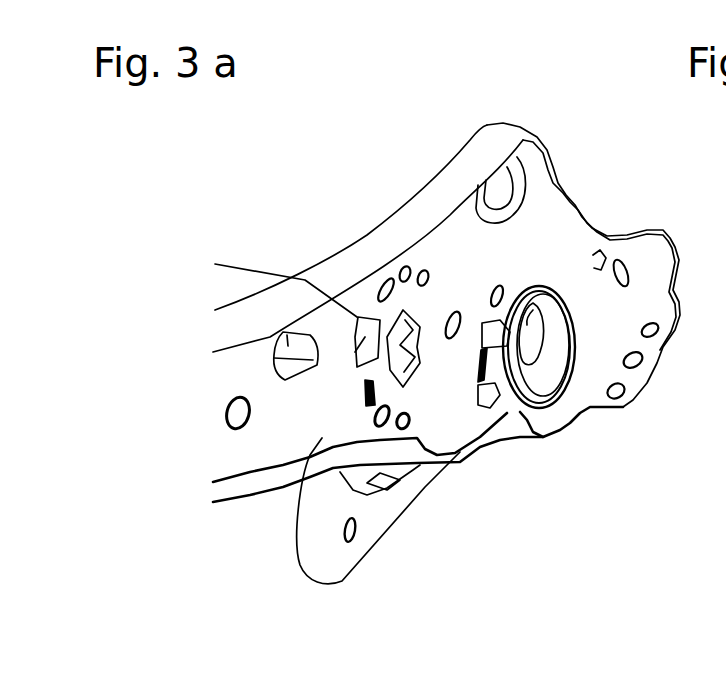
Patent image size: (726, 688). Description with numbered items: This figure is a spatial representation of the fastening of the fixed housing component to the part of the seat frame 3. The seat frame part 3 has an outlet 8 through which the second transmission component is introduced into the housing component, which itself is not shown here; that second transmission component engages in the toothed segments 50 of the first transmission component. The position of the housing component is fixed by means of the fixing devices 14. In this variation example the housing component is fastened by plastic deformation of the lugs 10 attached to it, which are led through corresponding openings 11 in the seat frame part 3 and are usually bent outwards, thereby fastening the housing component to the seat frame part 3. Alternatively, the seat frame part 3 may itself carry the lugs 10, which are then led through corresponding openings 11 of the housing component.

The seat frame part 3 is at (446, 353).
The outlet 8 is at (398, 318).
The lugs 10 is at (505, 378).
The openings 11 is at (357, 325).
The fixing devices 14 is at (407, 427).
The toothed segments 50 is at (375, 315).